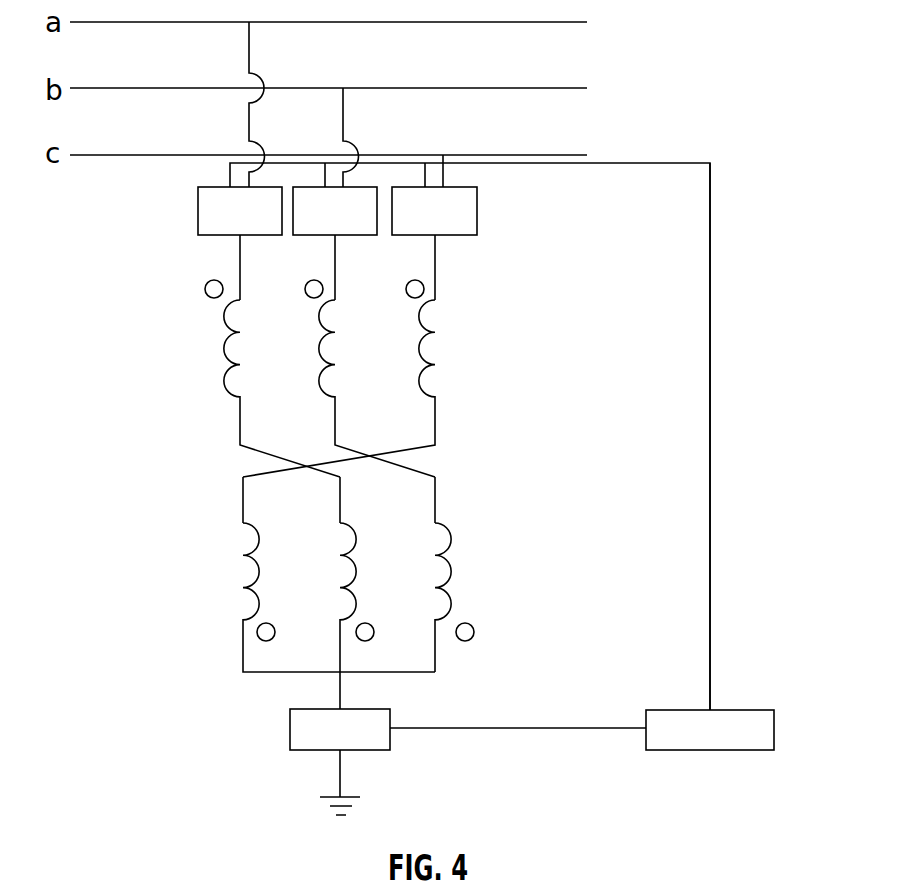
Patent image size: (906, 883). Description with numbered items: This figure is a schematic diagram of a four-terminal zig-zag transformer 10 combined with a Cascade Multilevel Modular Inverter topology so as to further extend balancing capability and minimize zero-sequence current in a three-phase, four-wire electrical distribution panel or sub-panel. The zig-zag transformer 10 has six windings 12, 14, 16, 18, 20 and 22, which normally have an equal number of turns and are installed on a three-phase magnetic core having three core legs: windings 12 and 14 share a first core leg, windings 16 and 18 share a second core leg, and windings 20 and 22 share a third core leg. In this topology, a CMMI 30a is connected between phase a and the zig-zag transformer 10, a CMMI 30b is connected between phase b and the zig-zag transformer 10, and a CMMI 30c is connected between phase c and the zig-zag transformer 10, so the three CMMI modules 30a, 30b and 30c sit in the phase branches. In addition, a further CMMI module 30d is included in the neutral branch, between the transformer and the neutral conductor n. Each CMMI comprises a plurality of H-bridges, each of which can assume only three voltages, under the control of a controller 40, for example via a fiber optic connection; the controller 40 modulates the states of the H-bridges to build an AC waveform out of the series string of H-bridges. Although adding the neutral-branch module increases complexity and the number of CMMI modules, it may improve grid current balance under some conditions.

The zig-zag transformer 10 is at (634, 341).
The winding 12 is at (223, 345).
The winding 14 is at (453, 572).
The winding 16 is at (317, 345).
The winding 18 is at (252, 557).
The winding 20 is at (440, 332).
The winding 22 is at (360, 572).
The CMMI 30a is at (198, 217).
The CMMI 30b is at (302, 235).
The CMMI 30c is at (477, 212).
The CMMI module 30d is at (290, 728).
The controller 40 is at (710, 750).